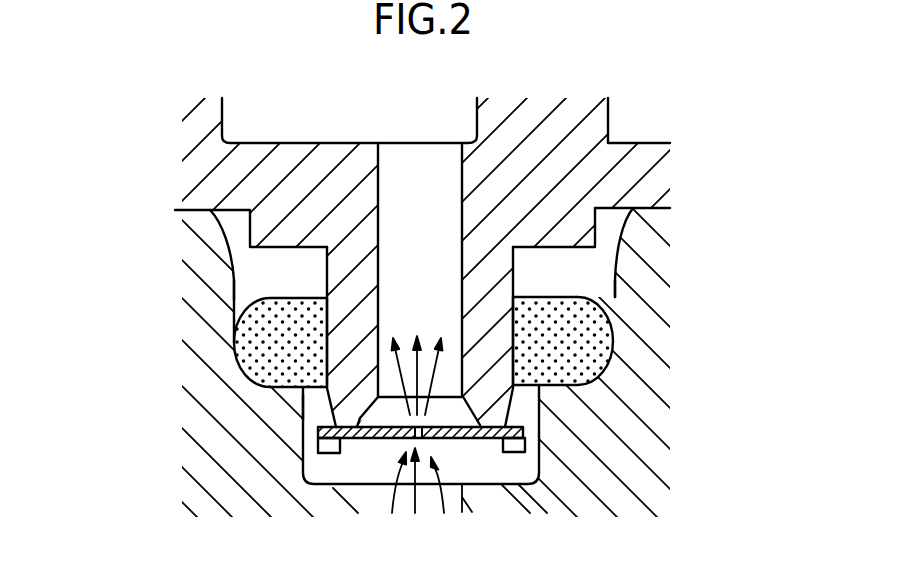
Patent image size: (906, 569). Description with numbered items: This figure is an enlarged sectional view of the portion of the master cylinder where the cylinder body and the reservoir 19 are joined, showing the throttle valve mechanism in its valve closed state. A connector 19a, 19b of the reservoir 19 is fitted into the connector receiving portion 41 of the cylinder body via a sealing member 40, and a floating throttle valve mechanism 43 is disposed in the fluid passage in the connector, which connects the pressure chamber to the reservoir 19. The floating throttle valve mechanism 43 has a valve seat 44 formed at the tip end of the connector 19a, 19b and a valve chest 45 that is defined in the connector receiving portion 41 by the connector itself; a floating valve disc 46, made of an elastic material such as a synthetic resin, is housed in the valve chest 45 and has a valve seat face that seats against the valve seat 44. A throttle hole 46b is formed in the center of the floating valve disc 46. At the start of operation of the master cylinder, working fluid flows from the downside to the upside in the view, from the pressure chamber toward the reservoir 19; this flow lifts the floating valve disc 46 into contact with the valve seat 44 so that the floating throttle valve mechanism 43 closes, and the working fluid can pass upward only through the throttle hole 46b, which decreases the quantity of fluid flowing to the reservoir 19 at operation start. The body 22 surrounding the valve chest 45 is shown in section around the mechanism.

The reservoir 19 is at (592, 125).
The connector 19a is at (347, 306).
The connector 19b is at (509, 337).
The housing / valve seat member 22 is at (635, 407).
The sealing member 40 is at (588, 347).
The connector receiving portion 41 is at (615, 275).
The floating throttle valve mechanism 43 is at (325, 425).
The valve seat 44 is at (335, 485).
The valve chest 45 is at (342, 438).
The floating valve disc 46 is at (523, 433).
The throttle hole 46b is at (418, 440).